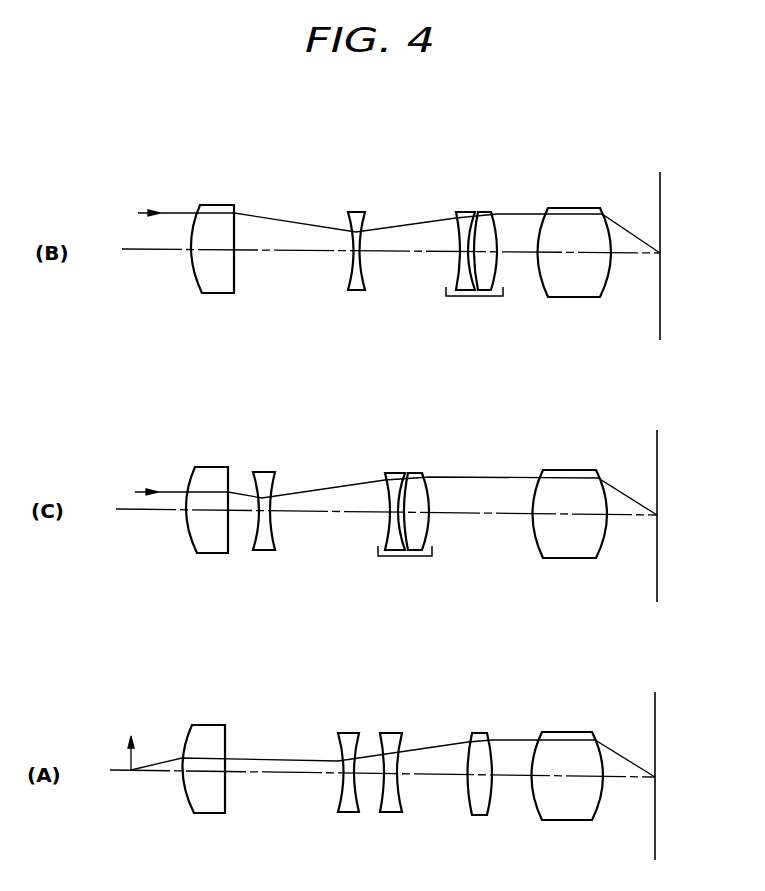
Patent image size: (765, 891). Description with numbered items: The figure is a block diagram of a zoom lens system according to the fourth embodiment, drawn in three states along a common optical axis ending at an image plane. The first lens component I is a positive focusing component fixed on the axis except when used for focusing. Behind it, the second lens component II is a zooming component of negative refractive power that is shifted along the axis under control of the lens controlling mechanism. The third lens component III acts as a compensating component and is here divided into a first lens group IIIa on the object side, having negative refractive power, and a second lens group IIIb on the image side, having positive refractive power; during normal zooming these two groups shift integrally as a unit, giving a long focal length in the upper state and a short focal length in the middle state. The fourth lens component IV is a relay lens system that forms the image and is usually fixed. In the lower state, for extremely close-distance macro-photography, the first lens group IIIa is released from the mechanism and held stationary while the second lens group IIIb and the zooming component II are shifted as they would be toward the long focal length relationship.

The first lens component I is at (208, 527).
The second lens component II is at (265, 465).
The third lens component III is at (412, 462).
The first lens group IIIa is at (428, 520).
The second lens group IIIb is at (459, 520).
The fourth lens component IV is at (572, 530).